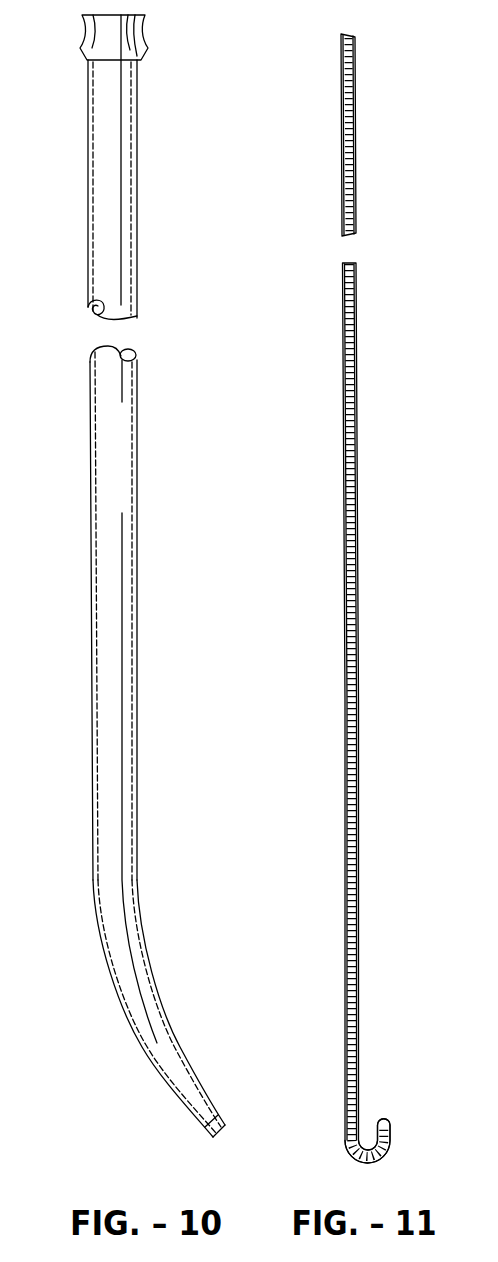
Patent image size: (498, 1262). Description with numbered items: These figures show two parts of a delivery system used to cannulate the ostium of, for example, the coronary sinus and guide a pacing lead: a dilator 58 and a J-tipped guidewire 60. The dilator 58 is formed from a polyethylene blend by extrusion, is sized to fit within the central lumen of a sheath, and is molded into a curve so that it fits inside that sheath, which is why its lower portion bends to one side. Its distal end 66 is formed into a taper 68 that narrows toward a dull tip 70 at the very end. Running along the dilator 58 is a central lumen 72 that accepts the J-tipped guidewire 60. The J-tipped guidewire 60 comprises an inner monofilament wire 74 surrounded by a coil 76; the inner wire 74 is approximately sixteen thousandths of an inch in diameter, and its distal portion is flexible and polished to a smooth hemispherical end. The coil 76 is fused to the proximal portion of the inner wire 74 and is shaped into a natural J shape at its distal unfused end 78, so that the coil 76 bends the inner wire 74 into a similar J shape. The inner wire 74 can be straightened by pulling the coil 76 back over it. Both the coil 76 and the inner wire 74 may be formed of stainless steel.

In FIG. 10, the dilator 58 is at (150, 580).
In FIG. 10, the central lumen 72 is at (117, 627).
In FIG. 10, the distal end 66 is at (173, 1012).
In FIG. 10, the taper 68 is at (167, 980).
In FIG. 10, the dull tip 70 is at (235, 1120).
In FIG. 11, the J-tipped guidewire 60 is at (331, 598).
In FIG. 11, the coil 76 is at (320, 598).
In FIG. 11, the inner monofilament wire 74 is at (338, 196).
In FIG. 11, the distal unfused end 78 is at (376, 1105).